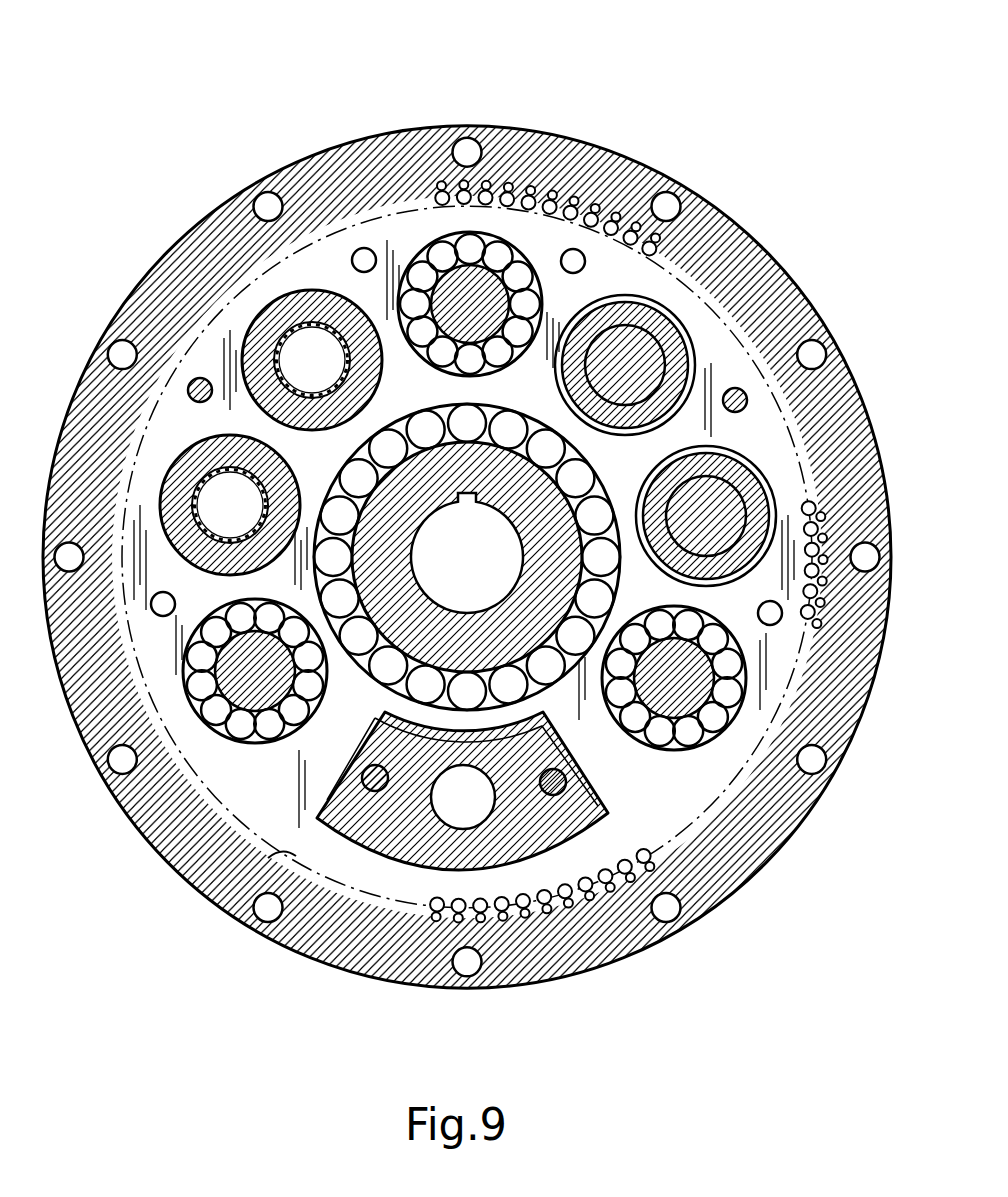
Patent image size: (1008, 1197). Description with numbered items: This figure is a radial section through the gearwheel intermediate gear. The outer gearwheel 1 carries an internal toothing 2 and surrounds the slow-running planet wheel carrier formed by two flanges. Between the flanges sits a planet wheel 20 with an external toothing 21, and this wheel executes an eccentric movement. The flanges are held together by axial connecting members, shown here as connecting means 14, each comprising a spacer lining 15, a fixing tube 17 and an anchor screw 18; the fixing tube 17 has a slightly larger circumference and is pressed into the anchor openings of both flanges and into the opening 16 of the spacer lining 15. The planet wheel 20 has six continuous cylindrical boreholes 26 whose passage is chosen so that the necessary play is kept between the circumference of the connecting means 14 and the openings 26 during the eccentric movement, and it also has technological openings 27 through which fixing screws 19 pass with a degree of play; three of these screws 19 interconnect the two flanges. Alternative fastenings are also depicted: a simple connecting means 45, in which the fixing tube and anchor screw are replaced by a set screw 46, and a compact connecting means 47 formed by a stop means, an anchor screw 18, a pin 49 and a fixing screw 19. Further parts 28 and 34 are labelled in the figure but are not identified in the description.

The gearwheel 1 is at (488, 120).
The internal toothing 2 is at (322, 880).
The connecting means 14 is at (270, 298).
The spacer lining 15 is at (317, 307).
The opening 16 is at (483, 782).
The fixing tube 17 is at (275, 330).
The anchor screw 18 is at (213, 503).
The connecting screws 19 is at (190, 380).
The planet wheel 20 is at (392, 240).
The external toothing 21 is at (172, 748).
The continuous openings 26 is at (350, 306).
The technological openings 27 is at (775, 622).
The hub 28 is at (407, 597).
The shaft bearing 34 is at (452, 298).
The simple connecting means 45 is at (701, 339).
The set screw 46 is at (650, 350).
The compact connecting means 47 is at (535, 905).
The pin 49 is at (455, 798).